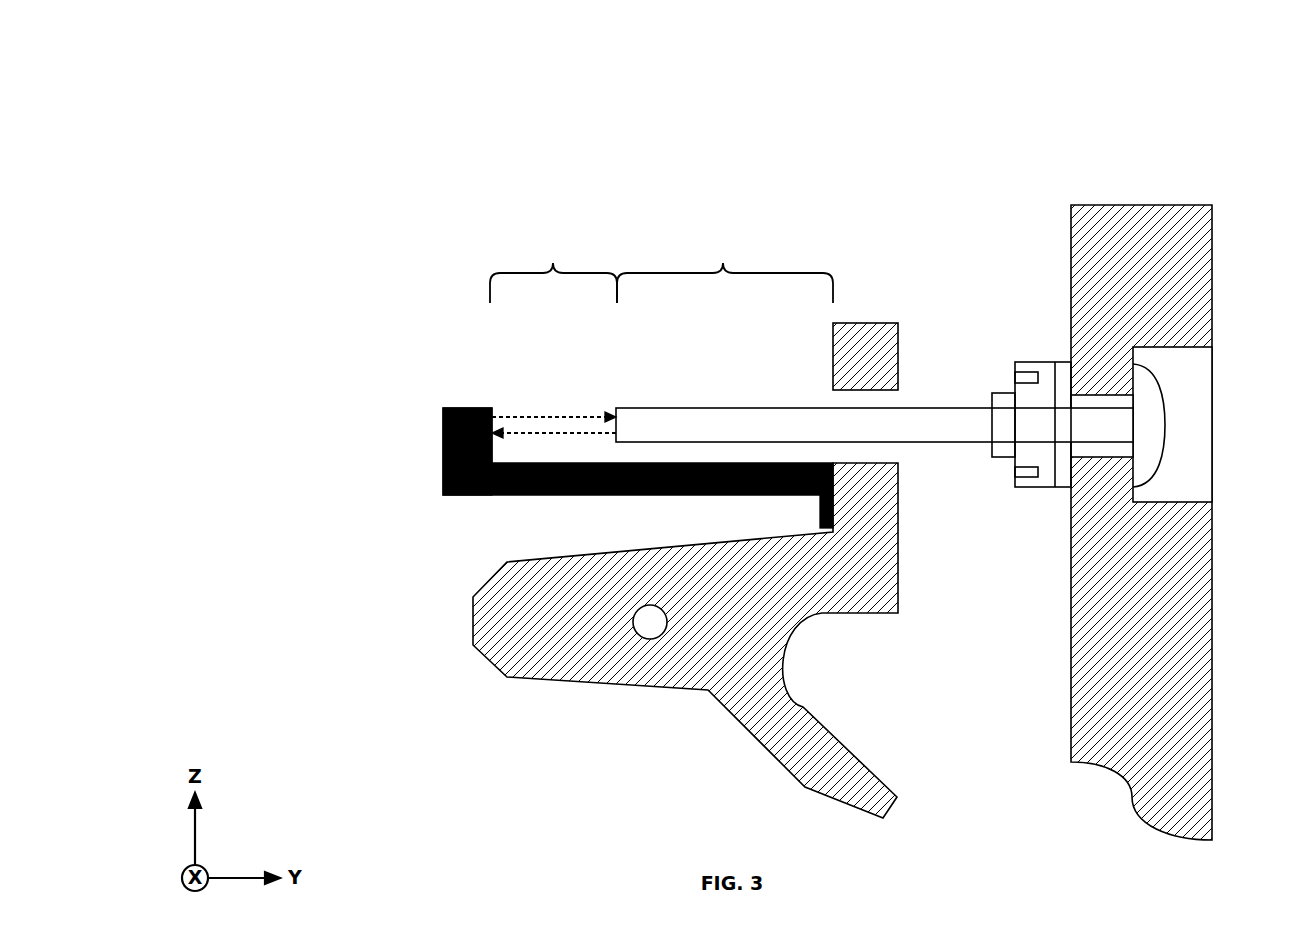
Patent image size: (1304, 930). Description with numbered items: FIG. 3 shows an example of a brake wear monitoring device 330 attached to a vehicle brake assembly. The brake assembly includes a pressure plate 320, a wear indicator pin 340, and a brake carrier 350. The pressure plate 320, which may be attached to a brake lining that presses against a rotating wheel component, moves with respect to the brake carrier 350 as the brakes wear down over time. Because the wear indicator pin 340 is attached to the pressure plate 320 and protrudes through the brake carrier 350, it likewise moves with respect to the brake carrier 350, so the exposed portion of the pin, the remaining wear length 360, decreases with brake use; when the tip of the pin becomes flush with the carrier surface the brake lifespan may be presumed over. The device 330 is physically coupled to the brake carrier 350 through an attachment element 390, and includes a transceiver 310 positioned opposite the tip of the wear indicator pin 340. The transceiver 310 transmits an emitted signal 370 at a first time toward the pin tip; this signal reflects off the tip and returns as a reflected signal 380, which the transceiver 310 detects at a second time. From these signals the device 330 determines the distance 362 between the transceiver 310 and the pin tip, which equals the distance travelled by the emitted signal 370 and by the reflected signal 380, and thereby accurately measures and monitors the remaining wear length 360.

The transceiver 310 is at (443, 441).
The pressure plate 320 is at (1138, 205).
The device 330 is at (523, 495).
The wear indicator pin 340 is at (962, 408).
The brake carrier 350 is at (608, 685).
The remaining wear length 360 is at (723, 260).
The distance 362 is at (553, 260).
The emitted signal 370 is at (585, 415).
The reflected signal 380 is at (550, 430).
The attachment element 390 is at (833, 507).